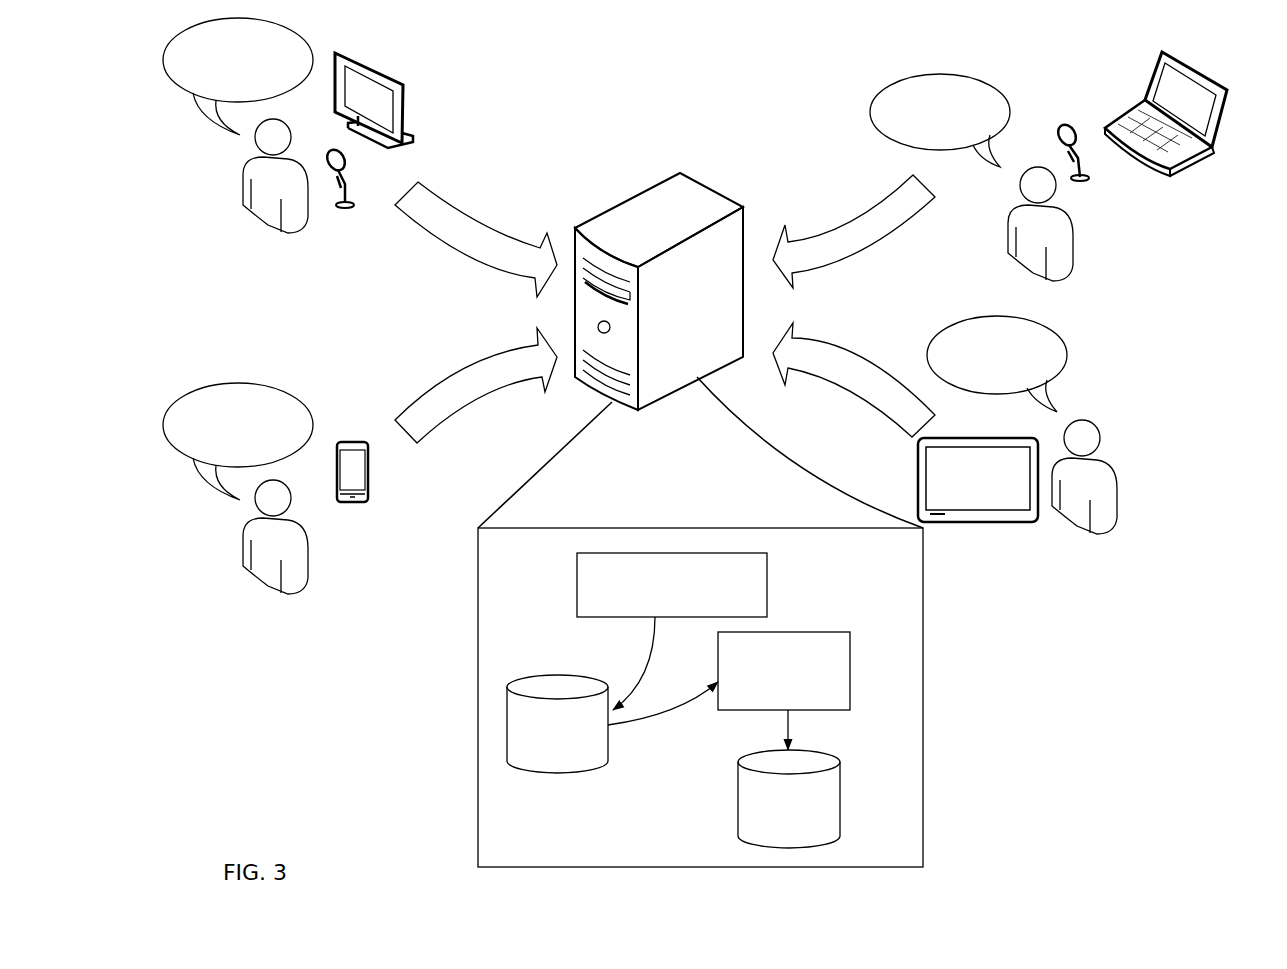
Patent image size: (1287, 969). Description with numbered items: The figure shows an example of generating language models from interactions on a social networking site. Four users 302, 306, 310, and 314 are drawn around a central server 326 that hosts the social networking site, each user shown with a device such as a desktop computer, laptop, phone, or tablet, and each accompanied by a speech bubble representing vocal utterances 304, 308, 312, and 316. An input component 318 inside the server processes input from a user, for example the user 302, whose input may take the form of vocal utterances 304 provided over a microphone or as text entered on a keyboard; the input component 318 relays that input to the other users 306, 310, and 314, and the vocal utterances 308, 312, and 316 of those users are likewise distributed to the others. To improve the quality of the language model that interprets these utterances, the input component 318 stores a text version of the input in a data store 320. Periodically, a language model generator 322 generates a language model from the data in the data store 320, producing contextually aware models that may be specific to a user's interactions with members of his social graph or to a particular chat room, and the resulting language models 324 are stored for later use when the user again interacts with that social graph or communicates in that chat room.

The user 302 is at (263, 247).
The vocal utterances 304 is at (238, 76).
The user 306 is at (1102, 262).
The vocal utterances 308 is at (940, 120).
The user 310 is at (240, 585).
The vocal utterances 312 is at (238, 441).
The user 314 is at (1147, 483).
The vocal utterances 316 is at (997, 364).
The input component 318 is at (768, 587).
The data store 320 is at (610, 780).
The language model generator 322 is at (852, 653).
The language models store 324 is at (843, 803).
The server 326 is at (716, 168).